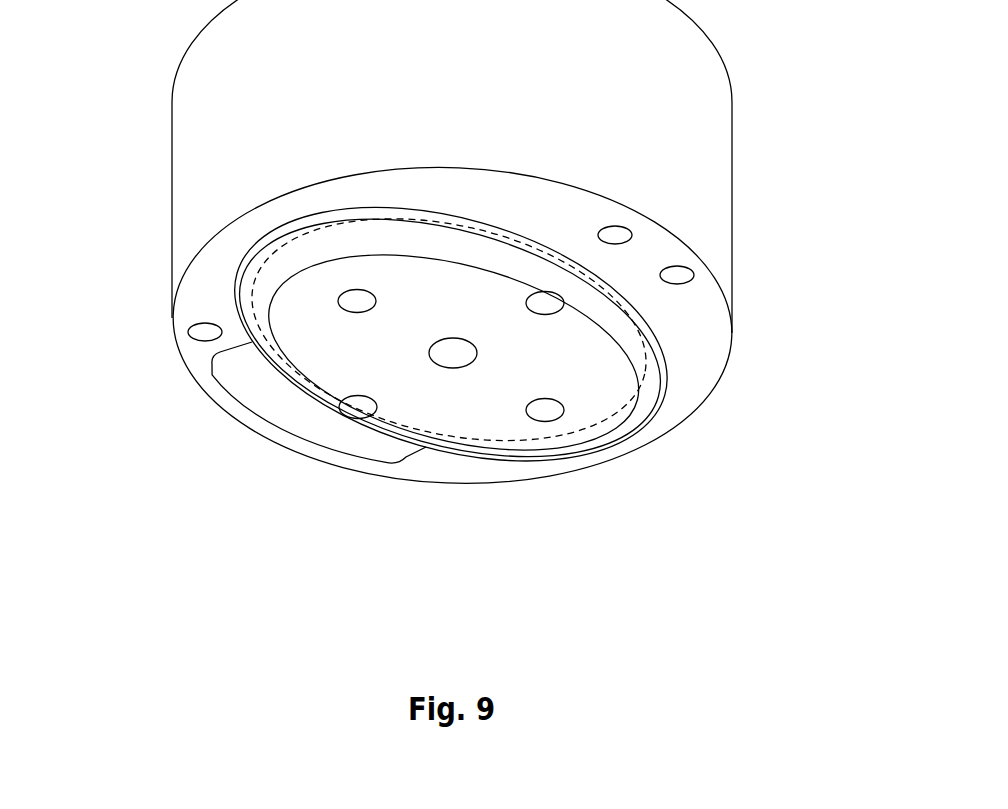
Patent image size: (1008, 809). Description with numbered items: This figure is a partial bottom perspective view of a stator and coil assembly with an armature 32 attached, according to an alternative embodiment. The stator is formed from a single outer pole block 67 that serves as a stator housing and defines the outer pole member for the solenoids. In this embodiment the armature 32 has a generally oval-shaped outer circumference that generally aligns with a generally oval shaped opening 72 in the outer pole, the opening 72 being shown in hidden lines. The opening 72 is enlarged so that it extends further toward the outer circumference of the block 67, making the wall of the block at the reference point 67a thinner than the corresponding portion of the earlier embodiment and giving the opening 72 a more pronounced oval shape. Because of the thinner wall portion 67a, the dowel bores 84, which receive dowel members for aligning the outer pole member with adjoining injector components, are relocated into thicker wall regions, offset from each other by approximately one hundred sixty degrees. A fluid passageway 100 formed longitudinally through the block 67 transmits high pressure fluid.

The outer pole block 67 is at (403, 166).
The wall portion of the outer pole block 67a is at (445, 326).
The dowel bores 84 is at (458, 303).
The fluid passageway 100 is at (721, 241).
The oval shaped opening 72 is at (307, 372).
The armature 32 is at (453, 402).